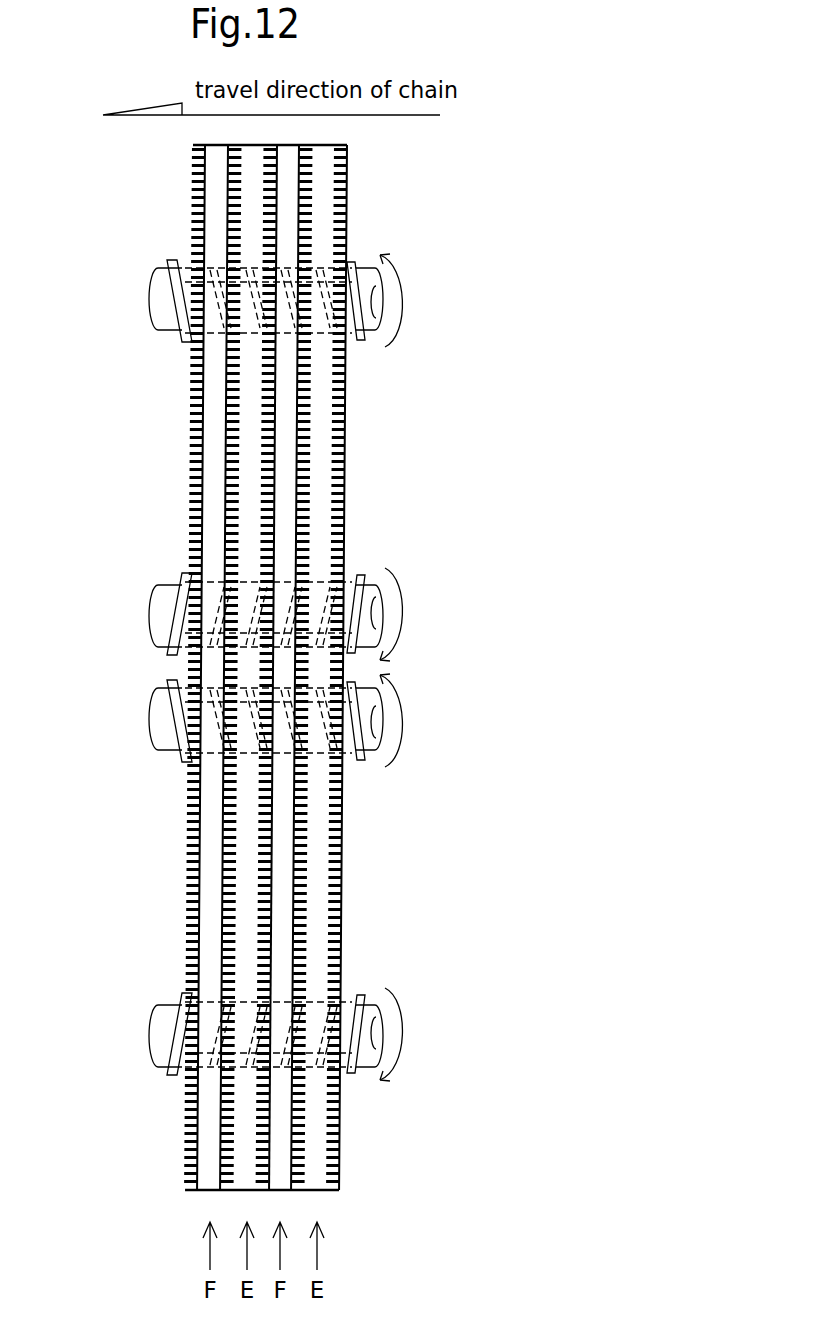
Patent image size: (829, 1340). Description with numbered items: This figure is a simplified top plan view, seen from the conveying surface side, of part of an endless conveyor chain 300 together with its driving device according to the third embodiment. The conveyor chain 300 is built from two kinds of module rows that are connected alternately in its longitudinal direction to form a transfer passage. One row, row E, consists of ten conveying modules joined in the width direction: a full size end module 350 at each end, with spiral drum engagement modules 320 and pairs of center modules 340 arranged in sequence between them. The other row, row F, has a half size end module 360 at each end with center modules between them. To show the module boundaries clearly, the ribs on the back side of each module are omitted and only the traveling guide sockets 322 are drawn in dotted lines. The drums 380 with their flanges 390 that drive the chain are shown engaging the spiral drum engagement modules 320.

The conveyor chain 300 is at (287, 664).
The spiral drum engagement module 320 is at (346, 985).
The traveling guide socket 322 is at (325, 1080).
The center module 340 is at (320, 915).
The full size end module 350 is at (318, 1125).
The half size end module 360 is at (284, 1168).
The roller 380 is at (162, 734).
The roller flange 390 is at (180, 1000).